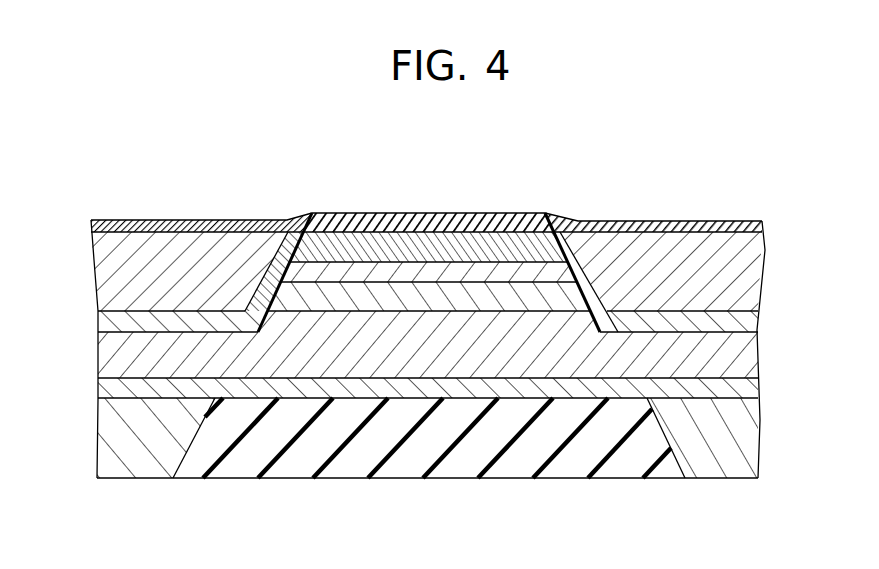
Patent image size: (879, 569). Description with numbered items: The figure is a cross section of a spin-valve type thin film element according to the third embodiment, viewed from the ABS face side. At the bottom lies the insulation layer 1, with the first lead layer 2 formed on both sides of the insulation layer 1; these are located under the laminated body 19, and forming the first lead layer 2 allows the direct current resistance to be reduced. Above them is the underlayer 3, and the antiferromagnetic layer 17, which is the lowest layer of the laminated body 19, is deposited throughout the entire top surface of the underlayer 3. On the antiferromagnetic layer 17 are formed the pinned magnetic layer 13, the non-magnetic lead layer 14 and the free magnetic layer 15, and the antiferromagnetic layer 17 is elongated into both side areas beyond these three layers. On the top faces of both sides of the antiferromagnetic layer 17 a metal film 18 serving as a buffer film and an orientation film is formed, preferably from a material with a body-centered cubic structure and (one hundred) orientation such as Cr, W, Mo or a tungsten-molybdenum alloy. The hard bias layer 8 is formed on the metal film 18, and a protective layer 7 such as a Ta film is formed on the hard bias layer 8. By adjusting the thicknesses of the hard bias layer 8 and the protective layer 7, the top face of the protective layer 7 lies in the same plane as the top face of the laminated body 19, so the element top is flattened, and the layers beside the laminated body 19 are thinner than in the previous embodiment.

The insulation layer 1 is at (550, 472).
The first lead layer 2 is at (128, 436).
The underlayer 3 is at (742, 394).
The protective layer 7 is at (205, 221).
The hard bias layer 8 is at (118, 267).
The pinned magnetic layer 13 is at (520, 300).
The non-magnetic lead layer 14 is at (480, 277).
The free magnetic layer 15 is at (437, 247).
The antiferromagnetic layer 17 is at (732, 358).
The metal film 18 is at (125, 320).
The laminated body 19 is at (309, 206).